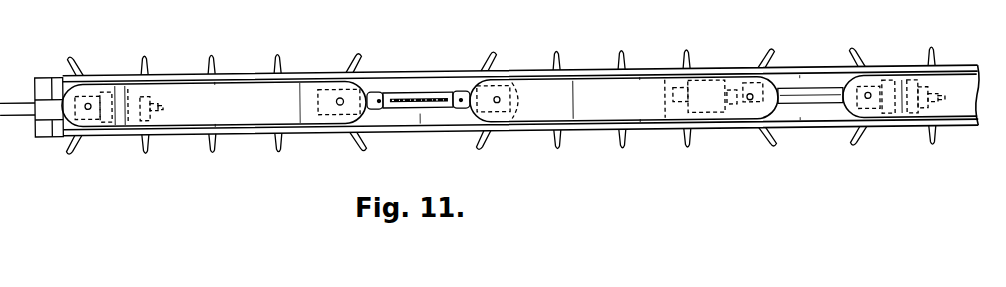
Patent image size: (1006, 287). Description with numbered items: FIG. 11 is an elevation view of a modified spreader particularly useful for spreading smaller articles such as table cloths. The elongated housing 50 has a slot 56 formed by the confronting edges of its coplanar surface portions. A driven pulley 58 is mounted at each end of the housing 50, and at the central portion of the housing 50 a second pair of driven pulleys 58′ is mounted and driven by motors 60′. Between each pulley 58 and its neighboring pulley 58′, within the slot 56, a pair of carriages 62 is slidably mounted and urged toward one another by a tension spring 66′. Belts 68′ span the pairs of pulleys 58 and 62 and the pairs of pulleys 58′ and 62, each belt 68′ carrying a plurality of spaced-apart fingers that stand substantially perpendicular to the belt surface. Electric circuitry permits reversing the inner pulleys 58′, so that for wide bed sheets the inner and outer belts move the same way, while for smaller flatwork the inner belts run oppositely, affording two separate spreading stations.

The housing 50 is at (418, 107).
The slot 56 is at (422, 112).
The pulley 58 is at (67, 138).
The second pair of driven pulleys 58′ is at (843, 122).
The motors 60′ is at (857, 101).
The carriages 62 is at (373, 114).
The tension spring 66′ is at (430, 102).
The belts 68′ is at (182, 136).